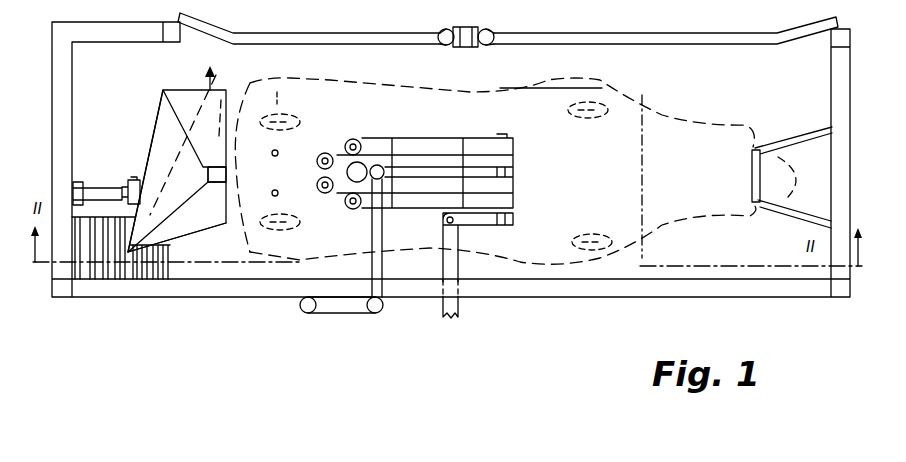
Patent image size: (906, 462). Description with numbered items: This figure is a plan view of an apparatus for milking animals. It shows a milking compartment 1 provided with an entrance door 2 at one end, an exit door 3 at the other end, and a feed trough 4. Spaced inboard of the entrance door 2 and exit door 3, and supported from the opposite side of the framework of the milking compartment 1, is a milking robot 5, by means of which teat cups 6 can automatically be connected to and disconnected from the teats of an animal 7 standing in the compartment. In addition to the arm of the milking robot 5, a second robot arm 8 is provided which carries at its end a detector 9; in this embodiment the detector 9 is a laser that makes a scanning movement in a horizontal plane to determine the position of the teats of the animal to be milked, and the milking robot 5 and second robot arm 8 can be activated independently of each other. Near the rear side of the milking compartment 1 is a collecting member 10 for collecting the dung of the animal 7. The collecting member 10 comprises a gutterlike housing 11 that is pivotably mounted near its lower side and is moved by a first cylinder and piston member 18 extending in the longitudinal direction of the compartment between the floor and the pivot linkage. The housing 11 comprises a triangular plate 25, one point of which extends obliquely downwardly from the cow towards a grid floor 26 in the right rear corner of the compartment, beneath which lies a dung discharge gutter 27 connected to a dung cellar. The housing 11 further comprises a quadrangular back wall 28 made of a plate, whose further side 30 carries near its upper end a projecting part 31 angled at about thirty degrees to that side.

The milking compartment 1 is at (607, 300).
The entrance door 2 is at (340, 18).
The exit door 3 is at (634, 33).
The feed trough 4 is at (797, 134).
The milking robot 5 is at (467, 115).
The teat cups 6 is at (354, 138).
The animal 7 is at (606, 181).
The second robot arm 8 is at (346, 311).
The detector 9 is at (362, 162).
The collecting member 10 is at (148, 106).
The gutterlike housing 11 is at (170, 137).
The first cylinder and piston member 18 is at (123, 182).
The triangular plate 25 is at (198, 212).
The grid floor 26 is at (123, 278).
The dung discharge gutter 27 is at (512, 249).
The back wall 28 is at (160, 155).
The further side 30 is at (190, 72).
The projecting part 31 is at (228, 177).